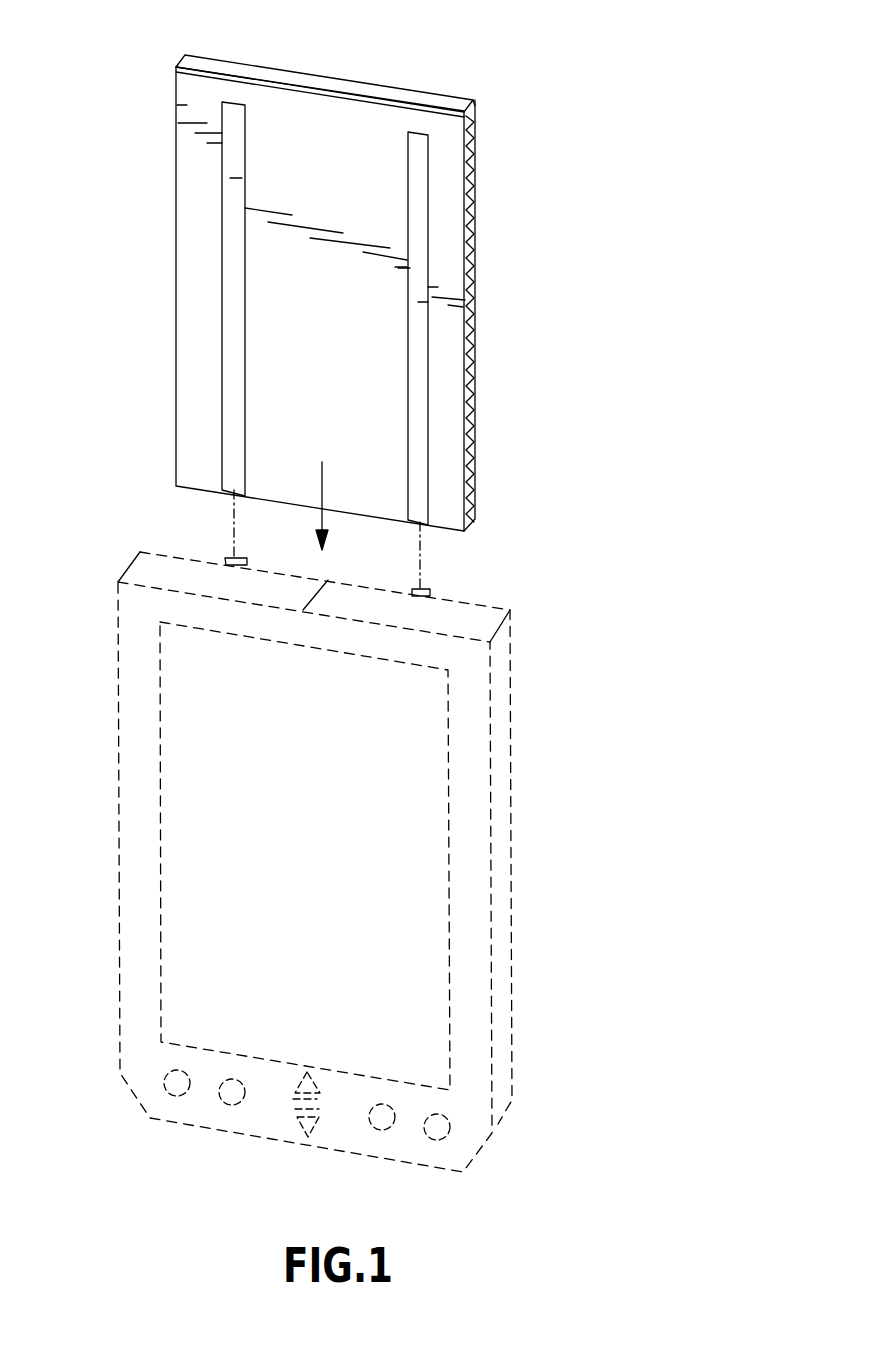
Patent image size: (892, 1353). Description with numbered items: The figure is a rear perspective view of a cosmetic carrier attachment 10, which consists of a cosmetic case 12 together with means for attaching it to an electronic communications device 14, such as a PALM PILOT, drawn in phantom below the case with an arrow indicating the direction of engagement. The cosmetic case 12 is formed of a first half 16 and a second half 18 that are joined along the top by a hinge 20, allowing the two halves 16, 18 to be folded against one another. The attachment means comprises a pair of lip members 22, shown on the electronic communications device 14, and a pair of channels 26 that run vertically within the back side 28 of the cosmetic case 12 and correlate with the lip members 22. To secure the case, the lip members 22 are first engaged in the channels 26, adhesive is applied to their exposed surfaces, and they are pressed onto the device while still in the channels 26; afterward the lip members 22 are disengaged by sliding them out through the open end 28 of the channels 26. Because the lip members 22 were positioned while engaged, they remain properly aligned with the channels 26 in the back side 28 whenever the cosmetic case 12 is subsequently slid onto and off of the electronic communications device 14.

The cosmetic carrier attachment 10 is at (587, 413).
The cosmetic case 12 is at (352, 71).
The electronic communications device 14 is at (502, 780).
The first half 16 is at (195, 58).
The second half 18 is at (180, 72).
The hinge 20 is at (475, 272).
The lip members 22 is at (233, 558).
The channels 26 is at (233, 283).
The back side of cosmetic case 28 is at (352, 370).